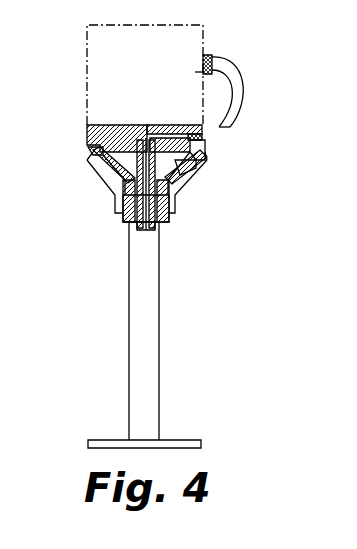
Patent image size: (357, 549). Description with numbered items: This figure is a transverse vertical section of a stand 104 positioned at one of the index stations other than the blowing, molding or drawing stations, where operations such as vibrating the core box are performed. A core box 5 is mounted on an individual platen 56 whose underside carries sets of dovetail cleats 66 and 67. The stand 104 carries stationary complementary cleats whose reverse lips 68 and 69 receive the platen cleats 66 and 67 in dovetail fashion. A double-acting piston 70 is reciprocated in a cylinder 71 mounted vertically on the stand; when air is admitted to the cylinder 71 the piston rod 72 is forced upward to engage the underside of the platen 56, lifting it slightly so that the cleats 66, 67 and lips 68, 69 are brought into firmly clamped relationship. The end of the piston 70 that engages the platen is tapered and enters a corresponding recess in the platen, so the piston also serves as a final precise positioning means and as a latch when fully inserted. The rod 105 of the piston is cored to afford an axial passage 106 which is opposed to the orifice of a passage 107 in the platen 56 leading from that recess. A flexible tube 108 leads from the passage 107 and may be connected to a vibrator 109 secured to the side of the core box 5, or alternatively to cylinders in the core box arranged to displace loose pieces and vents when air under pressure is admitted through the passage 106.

The core box 5 is at (86, 72).
The platen 56 is at (87, 135).
The cleat 66 is at (92, 181).
The cleat 67 is at (200, 168).
The reverse lip 68 is at (204, 149).
The reverse lip 69 is at (92, 157).
The double-acting piston 70 is at (123, 214).
The cylinder 71 is at (172, 209).
The piston rod 72 is at (190, 173).
The stand 104 is at (148, 327).
The rod 105 is at (158, 226).
The axial passage 106 is at (140, 233).
The passage 107 is at (162, 125).
The flexible tube 108 is at (236, 85).
The vibrator 109 is at (208, 58).